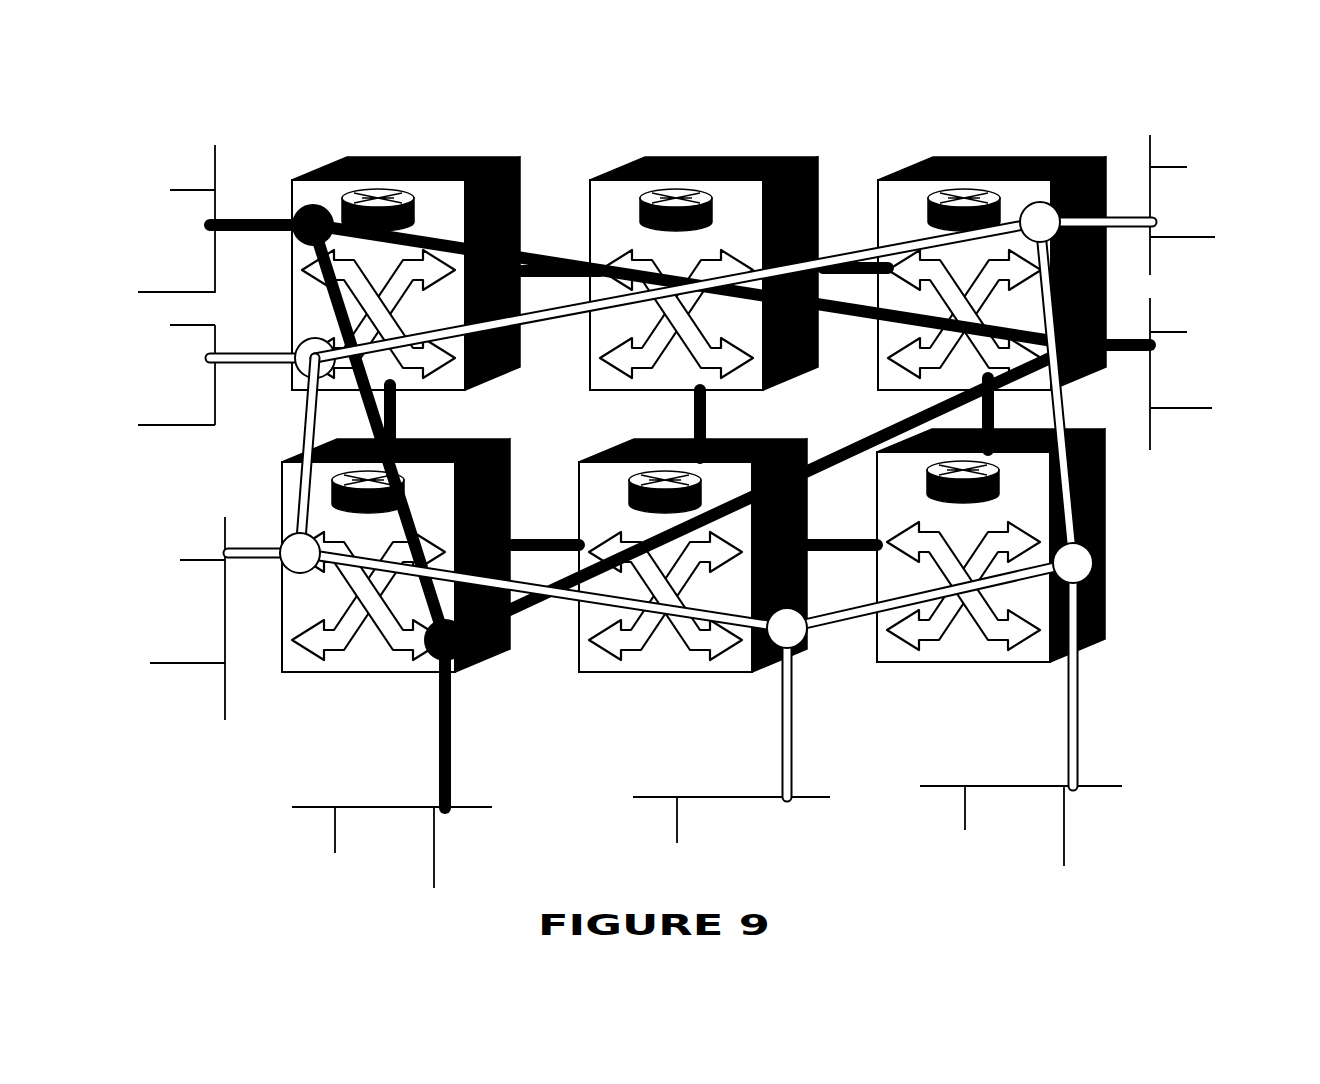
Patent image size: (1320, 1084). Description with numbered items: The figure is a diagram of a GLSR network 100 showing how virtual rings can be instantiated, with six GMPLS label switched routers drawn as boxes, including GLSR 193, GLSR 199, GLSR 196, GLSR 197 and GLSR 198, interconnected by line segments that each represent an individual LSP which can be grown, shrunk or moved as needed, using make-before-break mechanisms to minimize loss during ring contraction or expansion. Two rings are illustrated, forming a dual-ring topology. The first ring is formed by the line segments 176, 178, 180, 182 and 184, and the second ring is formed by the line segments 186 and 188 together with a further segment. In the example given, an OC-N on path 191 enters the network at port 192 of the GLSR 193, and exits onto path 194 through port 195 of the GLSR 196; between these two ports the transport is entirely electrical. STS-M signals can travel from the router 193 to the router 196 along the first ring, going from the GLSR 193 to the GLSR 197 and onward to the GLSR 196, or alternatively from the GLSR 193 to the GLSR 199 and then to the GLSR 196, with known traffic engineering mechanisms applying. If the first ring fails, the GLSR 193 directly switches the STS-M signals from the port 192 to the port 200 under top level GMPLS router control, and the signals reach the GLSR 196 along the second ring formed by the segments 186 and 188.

The network 100 is at (513, 465).
The line segment 176 is at (305, 414).
The line segment 178 is at (867, 253).
The line segment 180 is at (573, 598).
The line segment 182 is at (830, 628).
The line segment 184 is at (1070, 408).
The line segment 186 is at (837, 457).
The line segment 188 is at (843, 313).
The path 191 is at (245, 543).
The port 192 is at (290, 571).
The GLSR 193 is at (360, 672).
The path 194 is at (1125, 217).
The port 195 is at (1058, 190).
The GLSR 196 is at (985, 157).
The GLSR 197 is at (655, 672).
The switch 198 is at (959, 662).
The GLSR 199 is at (468, 158).
The port 200 is at (462, 652).